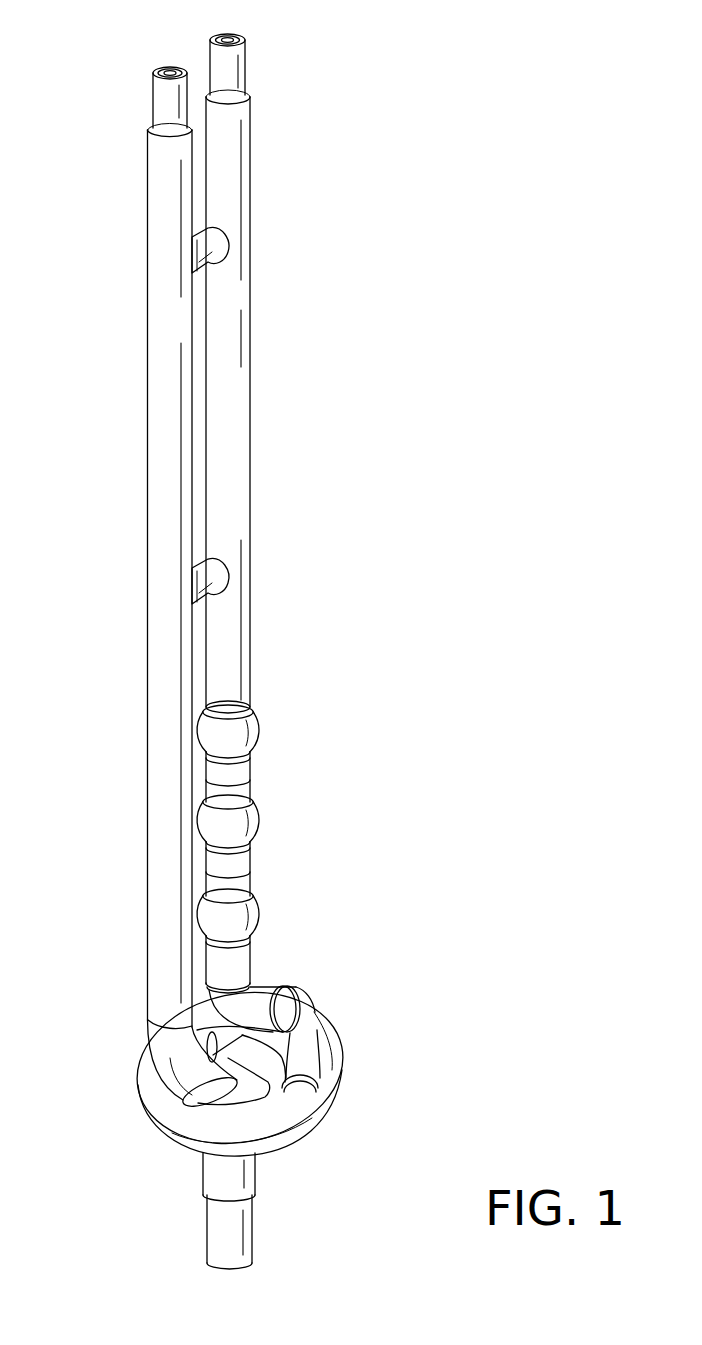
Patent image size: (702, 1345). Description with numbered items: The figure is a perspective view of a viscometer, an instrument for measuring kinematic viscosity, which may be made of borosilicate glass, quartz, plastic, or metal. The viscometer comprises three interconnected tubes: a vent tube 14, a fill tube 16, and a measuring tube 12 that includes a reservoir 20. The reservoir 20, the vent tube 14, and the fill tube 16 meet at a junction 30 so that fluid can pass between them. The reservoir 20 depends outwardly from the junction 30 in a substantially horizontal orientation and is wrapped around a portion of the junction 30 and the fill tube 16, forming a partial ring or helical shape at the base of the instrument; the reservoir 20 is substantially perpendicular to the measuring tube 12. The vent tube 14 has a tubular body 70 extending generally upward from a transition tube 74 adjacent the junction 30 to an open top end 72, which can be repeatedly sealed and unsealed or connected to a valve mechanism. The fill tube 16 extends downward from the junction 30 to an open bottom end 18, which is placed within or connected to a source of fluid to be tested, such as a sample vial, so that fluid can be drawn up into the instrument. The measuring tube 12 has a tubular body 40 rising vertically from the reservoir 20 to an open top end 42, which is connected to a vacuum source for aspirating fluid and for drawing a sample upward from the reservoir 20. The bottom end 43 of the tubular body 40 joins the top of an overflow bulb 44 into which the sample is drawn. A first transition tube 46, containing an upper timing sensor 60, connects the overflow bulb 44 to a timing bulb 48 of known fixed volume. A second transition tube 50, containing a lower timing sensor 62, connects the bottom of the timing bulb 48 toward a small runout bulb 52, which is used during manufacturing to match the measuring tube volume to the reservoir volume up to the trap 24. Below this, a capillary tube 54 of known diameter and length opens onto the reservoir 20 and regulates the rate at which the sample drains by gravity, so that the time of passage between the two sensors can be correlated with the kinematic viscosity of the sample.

The measuring tube 12 is at (281, 497).
The vent tube 14 is at (139, 574).
The fill tube 16 is at (253, 1222).
The open bottom end 18 is at (236, 1265).
The reservoir 20 is at (283, 1140).
The trap 24 is at (270, 1053).
The junction 30 is at (248, 1097).
The tubular body 40 is at (232, 428).
The open top end 42 is at (228, 40).
The bottom end 43 is at (227, 713).
The overflow bulb 44 is at (252, 722).
The first transition tube 46 is at (262, 742).
The timing bulb 48 is at (255, 820).
The second transition tube 50 is at (243, 850).
The runout bulb 52 is at (255, 912).
The capillary tube 54 is at (233, 963).
The upper timing sensor 60 is at (243, 770).
The lower timing sensor 62 is at (245, 877).
The tubular body 70 is at (162, 627).
The open top end 72 is at (170, 72).
The transition tube 74 is at (173, 1060).